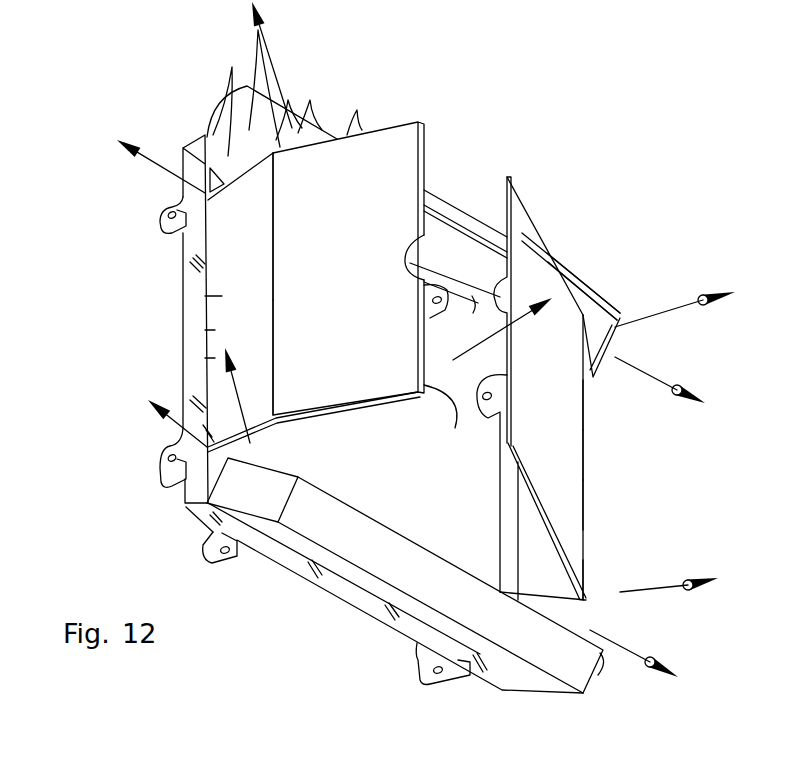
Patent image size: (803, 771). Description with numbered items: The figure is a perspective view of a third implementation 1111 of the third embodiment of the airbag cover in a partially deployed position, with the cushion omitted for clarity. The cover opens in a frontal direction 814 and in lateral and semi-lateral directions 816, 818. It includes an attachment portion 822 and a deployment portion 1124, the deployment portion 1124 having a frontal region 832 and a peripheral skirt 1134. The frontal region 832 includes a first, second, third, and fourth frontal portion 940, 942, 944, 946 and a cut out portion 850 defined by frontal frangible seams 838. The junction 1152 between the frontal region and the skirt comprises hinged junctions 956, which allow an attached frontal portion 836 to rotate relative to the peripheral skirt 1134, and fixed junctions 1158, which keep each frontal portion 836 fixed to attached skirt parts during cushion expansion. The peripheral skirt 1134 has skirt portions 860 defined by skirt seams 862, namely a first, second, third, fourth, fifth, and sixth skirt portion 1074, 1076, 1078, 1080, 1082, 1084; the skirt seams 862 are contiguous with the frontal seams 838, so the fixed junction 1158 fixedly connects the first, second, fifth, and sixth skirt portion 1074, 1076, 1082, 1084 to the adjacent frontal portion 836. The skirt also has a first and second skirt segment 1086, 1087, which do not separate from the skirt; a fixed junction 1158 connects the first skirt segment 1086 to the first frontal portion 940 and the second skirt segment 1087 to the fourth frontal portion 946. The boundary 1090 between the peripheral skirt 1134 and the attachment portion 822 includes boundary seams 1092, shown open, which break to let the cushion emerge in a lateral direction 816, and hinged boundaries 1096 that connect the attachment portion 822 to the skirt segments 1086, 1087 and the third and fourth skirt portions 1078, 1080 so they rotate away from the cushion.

The third implementation 1111 is at (82, 85).
The attachment portion 822 is at (185, 137).
The first skirt portion 1074 is at (212, 135).
The hinged boundary 1096 is at (187, 235).
The third skirt portion 1078 is at (205, 262).
The peripheral skirt 1134 is at (223, 306).
The boundary 1090 is at (207, 337).
The deployment portion 1124 is at (213, 362).
The skirt portions 860 is at (205, 395).
The boundary seam 1092 is at (230, 100).
The skirt seams 862 is at (258, 462).
The first frontal portion 940 is at (305, 127).
The junction 1152 is at (278, 277).
The second frontal portion 942 is at (285, 220).
The hinged junctions 956 is at (278, 363).
The first skirt segment 1086 is at (452, 243).
The fixed junction 1158 is at (287, 103).
The frontal direction 814 is at (505, 352).
The cut out portion 850 is at (510, 292).
The second skirt portion 1076 is at (610, 343).
The third frontal portion 944 is at (573, 417).
The frontal region 832 is at (573, 470).
The fourth skirt portion 1080 is at (585, 587).
The frontal frangible seams 838 is at (350, 133).
The fourth frontal portion 946 is at (360, 560).
The frontal portion 836 is at (323, 570).
The second skirt segment 1087 is at (287, 550).
The fifth skirt portion 1082 is at (247, 503).
The sixth skirt portion 1084 is at (583, 677).
The lateral direction 816 is at (155, 168).
The semi-lateral direction 818 is at (268, 28).